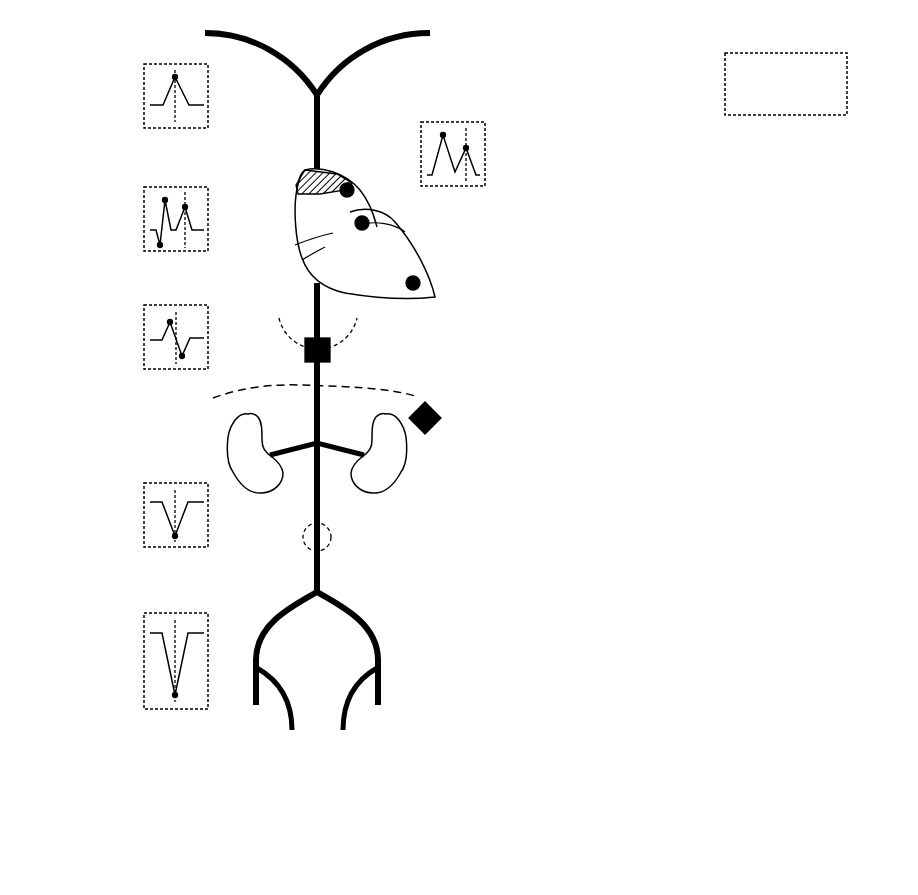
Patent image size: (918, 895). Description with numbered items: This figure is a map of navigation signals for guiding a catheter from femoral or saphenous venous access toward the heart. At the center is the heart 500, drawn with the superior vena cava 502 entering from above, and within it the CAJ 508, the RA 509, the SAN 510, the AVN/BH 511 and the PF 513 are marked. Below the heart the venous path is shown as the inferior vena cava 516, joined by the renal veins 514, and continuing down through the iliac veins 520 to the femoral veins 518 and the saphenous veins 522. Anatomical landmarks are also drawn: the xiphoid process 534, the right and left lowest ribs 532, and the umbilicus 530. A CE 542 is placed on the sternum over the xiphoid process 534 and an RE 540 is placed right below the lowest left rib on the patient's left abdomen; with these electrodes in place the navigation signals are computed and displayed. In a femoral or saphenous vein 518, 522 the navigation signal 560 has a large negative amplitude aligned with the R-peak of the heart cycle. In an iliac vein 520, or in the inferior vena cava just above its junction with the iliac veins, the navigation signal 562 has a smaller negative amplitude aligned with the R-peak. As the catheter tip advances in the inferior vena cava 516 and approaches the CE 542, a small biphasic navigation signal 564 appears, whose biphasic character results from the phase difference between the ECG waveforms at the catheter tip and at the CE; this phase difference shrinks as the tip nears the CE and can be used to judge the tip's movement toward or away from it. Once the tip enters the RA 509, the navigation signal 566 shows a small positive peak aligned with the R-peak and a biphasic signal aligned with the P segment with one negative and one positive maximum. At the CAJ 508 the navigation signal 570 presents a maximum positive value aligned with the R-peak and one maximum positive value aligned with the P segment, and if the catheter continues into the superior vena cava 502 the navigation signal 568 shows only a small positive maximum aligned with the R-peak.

The heart 500 is at (438, 300).
The superior vena cava 502 is at (313, 112).
The CAJ 508 is at (323, 163).
The RA 509 is at (297, 262).
The SAN 510 is at (382, 205).
The AVN/BH 511 is at (427, 240).
The PF 513 is at (421, 282).
The renal veins 514 is at (293, 460).
The inferior vena cava 516 is at (308, 336).
The femoral veins 518 is at (428, 747).
The iliac veins 520 is at (280, 613).
The saphenous veins 522 is at (296, 734).
The umbilicus 530 is at (332, 540).
The right and left lowest ribs 532 is at (213, 397).
The xiphoid process 534 is at (420, 392).
The RE 540 is at (443, 418).
The CE 542 is at (331, 348).
The navigation signal 560 is at (253, 650).
The navigation signal 562 is at (313, 496).
The navigation signal 564 is at (305, 352).
The navigation signal 566 is at (293, 246).
The navigation signal 568 is at (313, 118).
The navigation signal 570 is at (323, 162).